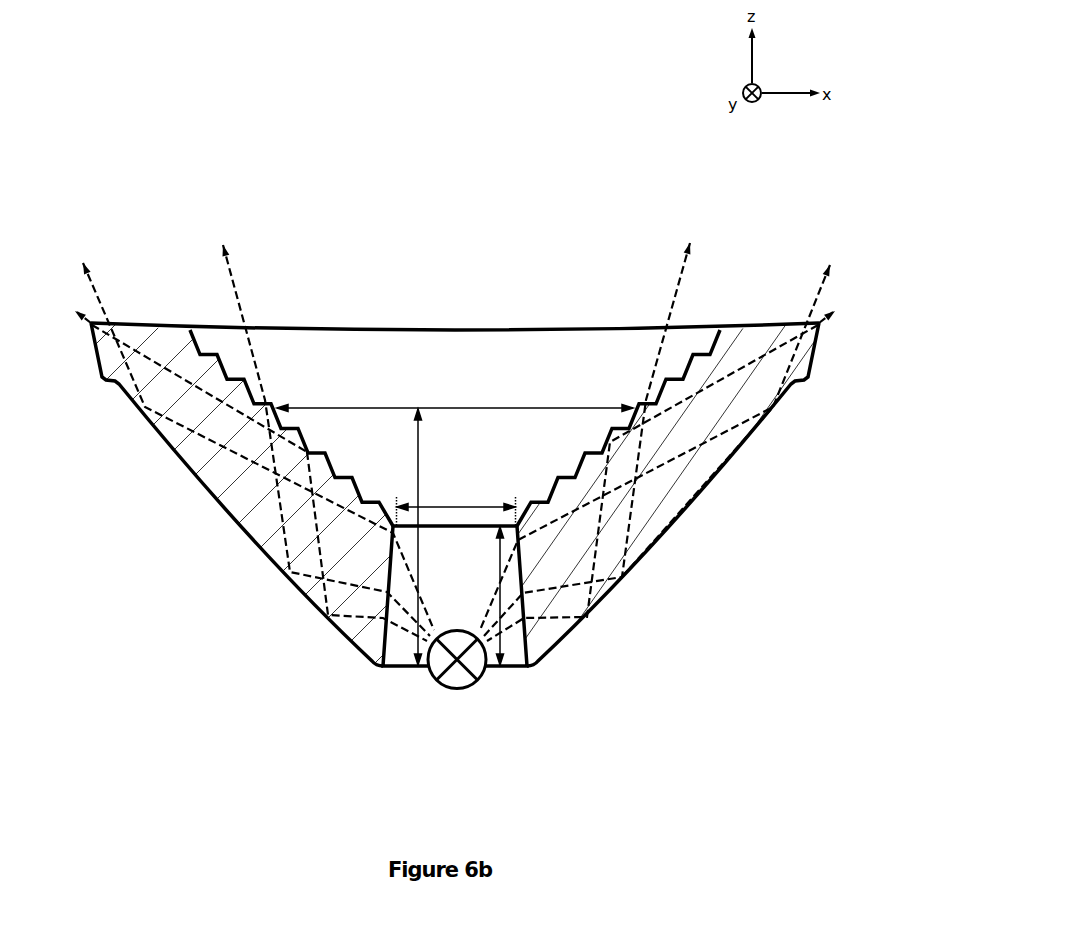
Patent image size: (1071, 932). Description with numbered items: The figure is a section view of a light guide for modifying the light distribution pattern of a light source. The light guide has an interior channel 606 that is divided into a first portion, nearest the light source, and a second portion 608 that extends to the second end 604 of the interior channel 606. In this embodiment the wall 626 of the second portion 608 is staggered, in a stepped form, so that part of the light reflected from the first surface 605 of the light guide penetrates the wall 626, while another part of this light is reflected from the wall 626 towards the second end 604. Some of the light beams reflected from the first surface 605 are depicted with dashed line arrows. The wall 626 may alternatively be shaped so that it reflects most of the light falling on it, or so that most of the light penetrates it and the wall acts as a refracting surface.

The second end 604 is at (498, 327).
The first surface 605 is at (678, 533).
The interior channel 606 is at (403, 373).
The second portion 608 is at (513, 464).
The wall 626 is at (674, 367).